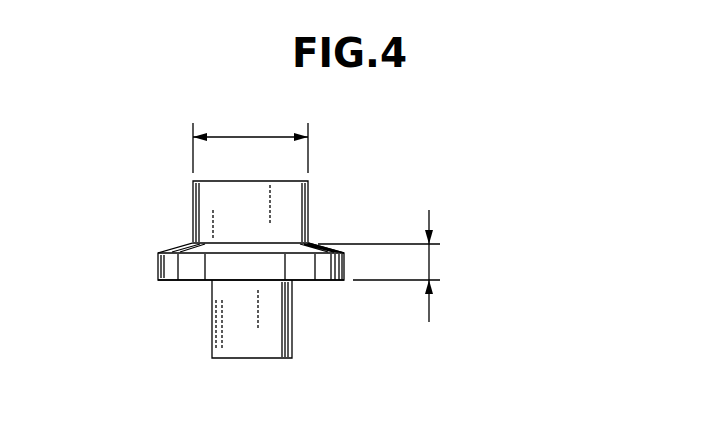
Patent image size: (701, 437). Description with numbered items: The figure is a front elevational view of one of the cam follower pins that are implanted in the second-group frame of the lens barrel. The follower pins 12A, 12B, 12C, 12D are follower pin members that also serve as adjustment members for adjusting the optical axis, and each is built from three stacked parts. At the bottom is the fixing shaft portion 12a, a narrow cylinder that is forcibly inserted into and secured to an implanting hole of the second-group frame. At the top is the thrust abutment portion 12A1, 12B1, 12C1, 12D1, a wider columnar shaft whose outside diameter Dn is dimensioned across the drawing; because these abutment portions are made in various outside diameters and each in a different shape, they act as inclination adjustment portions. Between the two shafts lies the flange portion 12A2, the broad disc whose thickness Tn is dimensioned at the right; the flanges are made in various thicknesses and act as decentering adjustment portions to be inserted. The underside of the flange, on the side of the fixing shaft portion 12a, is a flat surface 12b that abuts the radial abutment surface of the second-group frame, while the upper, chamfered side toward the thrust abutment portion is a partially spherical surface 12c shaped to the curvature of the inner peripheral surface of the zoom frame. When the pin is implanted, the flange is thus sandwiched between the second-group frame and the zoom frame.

The follower pin 12A is at (127, 385).
The follower pin 12B is at (339, 271).
The follower pin 12C is at (339, 271).
The follower pin 12D is at (339, 271).
The fixing shaft portion 12a is at (212, 325).
The flat surface 12b is at (172, 280).
The partially spherical surface 12c is at (340, 253).
The thrust abutment portion 12A1 is at (308, 205).
The thrust abutment portion 12B1 is at (250, 211).
The thrust abutment portion 12C1 is at (250, 211).
The thrust abutment portion 12D1 is at (250, 211).
The flange portion 12A2 is at (320, 270).
The outside diameter Dn is at (254, 137).
The thickness Tn is at (429, 262).